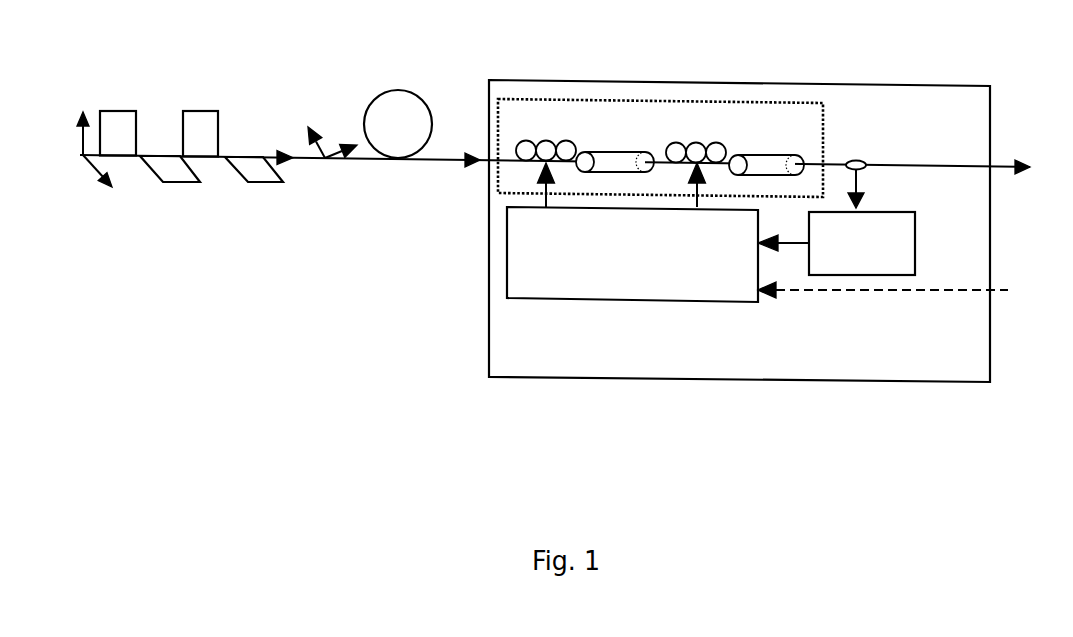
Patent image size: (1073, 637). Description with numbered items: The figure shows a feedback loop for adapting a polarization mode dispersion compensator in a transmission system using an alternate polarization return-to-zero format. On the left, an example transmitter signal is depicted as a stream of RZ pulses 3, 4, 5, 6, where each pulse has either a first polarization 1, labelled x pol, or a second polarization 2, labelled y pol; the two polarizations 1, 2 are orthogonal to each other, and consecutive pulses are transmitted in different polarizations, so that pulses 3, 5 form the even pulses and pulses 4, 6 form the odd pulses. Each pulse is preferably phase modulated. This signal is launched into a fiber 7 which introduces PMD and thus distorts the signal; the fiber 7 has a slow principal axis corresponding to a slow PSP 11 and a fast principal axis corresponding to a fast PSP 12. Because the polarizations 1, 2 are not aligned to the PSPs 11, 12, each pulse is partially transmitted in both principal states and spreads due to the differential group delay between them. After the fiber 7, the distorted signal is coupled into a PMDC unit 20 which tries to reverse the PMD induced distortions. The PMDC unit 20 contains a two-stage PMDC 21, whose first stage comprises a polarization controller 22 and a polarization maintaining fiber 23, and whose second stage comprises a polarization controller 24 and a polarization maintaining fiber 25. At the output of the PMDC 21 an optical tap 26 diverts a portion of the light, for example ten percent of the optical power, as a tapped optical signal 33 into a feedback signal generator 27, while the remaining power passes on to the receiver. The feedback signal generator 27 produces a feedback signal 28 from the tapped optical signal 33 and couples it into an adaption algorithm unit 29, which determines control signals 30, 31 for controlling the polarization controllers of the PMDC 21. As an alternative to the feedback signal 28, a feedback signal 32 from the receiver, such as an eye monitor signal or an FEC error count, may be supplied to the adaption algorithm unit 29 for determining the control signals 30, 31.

The first polarization 1 is at (82, 145).
The second polarization 2 is at (93, 170).
The RZ pulse 3 is at (122, 105).
The RZ pulse 4 is at (185, 185).
The RZ pulse 5 is at (195, 105).
The RZ pulse 6 is at (260, 185).
The fiber 7 is at (395, 88).
The slow PSP 11 is at (318, 147).
The fast PSP 12 is at (345, 143).
The PMDC unit 20 is at (497, 73).
The two-stage PMDC 21 is at (653, 97).
The polarization controller 22 is at (528, 135).
The polarization maintaining fiber 23 is at (588, 148).
The polarization controller 24 is at (718, 135).
The polarization maintaining fiber 25 is at (740, 150).
The optical tap 26 is at (858, 153).
The feedback signal generator 27 is at (918, 243).
The feedback signal 28 is at (802, 238).
The adaption algorithm unit 29 is at (685, 303).
The control signal 30 is at (546, 198).
The control signal 31 is at (697, 198).
The feedback signal from the receiver 32 is at (832, 290).
The tapped optical signal 33 is at (865, 190).